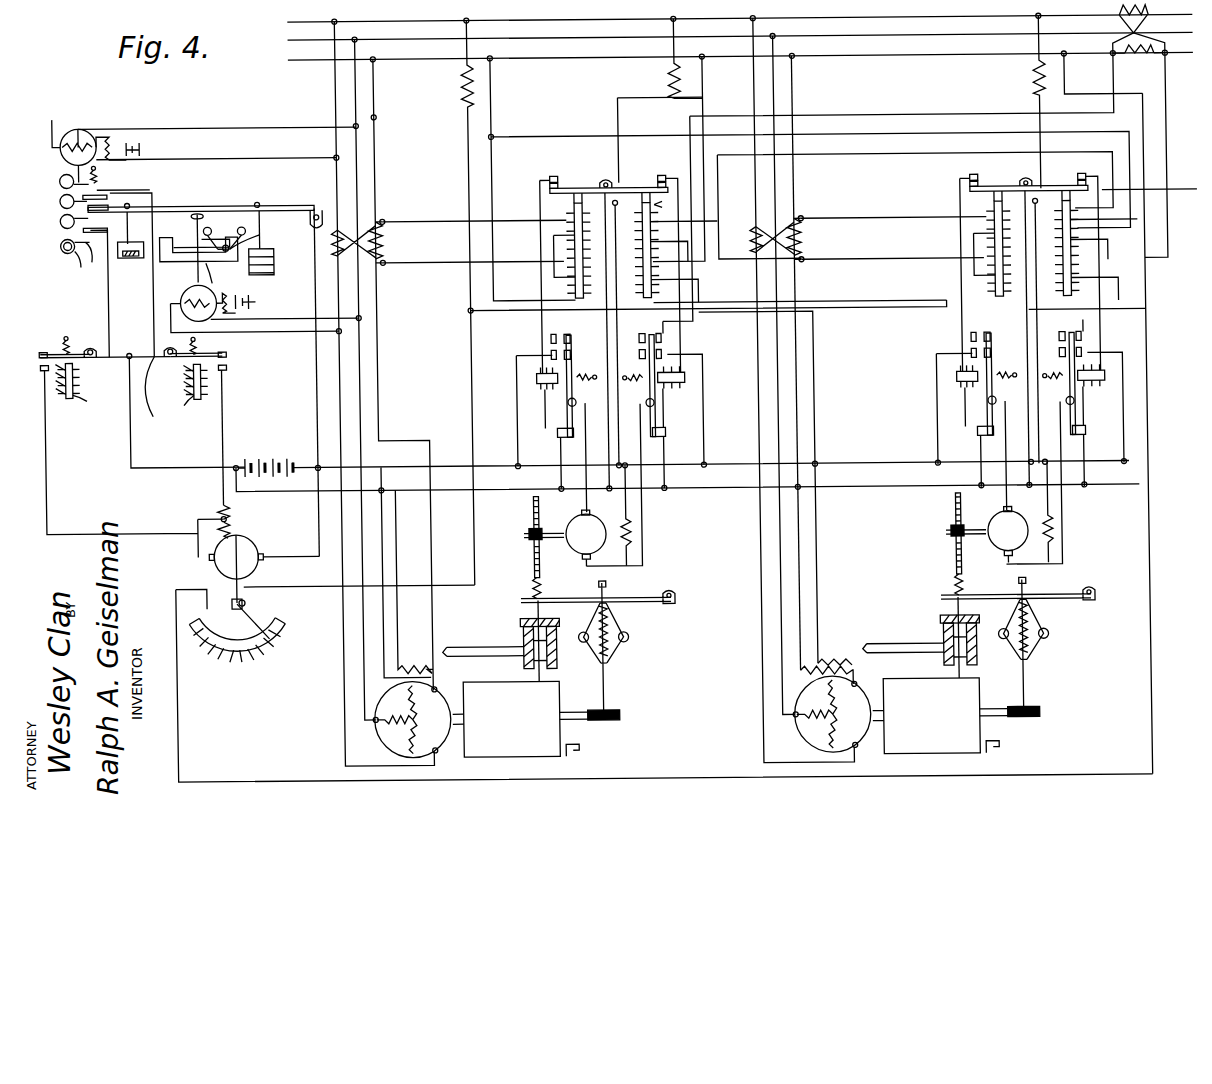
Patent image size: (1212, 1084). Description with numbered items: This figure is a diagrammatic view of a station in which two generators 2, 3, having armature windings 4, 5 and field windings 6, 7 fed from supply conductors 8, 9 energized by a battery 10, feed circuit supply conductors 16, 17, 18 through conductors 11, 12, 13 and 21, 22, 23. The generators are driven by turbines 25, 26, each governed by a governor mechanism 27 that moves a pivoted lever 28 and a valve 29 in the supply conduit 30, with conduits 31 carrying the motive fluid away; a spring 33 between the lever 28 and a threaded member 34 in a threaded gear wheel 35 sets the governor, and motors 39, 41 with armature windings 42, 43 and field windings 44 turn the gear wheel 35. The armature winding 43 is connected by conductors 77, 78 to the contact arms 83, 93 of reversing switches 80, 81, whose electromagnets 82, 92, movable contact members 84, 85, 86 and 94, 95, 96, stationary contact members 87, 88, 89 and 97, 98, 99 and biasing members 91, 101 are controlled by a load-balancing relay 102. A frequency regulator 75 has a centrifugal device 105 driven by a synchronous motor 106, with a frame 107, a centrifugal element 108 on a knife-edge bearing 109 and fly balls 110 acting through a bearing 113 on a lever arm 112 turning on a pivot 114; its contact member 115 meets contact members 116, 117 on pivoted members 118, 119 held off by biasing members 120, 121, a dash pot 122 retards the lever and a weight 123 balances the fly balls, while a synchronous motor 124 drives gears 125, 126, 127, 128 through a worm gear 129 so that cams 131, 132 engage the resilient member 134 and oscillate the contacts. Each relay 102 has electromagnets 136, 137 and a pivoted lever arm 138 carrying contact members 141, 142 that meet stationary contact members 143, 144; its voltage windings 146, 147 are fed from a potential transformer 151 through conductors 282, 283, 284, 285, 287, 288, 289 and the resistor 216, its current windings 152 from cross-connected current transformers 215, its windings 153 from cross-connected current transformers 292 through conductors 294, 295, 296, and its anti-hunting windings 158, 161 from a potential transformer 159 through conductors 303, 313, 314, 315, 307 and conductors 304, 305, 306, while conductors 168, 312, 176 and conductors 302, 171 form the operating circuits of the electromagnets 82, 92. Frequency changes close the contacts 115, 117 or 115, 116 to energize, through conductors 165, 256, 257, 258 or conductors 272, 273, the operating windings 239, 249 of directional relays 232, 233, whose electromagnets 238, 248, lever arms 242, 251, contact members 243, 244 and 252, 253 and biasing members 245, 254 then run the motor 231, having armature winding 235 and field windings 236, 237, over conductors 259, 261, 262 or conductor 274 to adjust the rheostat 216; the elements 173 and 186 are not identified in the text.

The generator 2 is at (462, 679).
The generator 3 is at (872, 679).
The armature winding 4 is at (434, 746).
The armature winding 5 is at (850, 744).
The field winding 6 is at (414, 650).
The field winding 7 is at (829, 648).
The supply conductor 8 is at (736, 464).
The supply conductor 9 is at (732, 490).
The battery 10 is at (284, 456).
The conductor 11 is at (340, 404).
The conductor 12 is at (360, 426).
The conductor 13 is at (380, 424).
The circuit supply conductor 16 is at (556, 20).
The circuit supply conductor 17 is at (556, 38).
The circuit supply conductor 18 is at (562, 58).
The conductor 21 is at (758, 392).
The conductor 22 is at (778, 410).
The conductor 23 is at (796, 407).
The turbine 25 is at (528, 758).
The turbine 26 is at (910, 756).
The governor mechanism 27 is at (626, 646).
The pivoted lever 28 is at (620, 596).
The valve 29 is at (518, 631).
The supply conduit 30 is at (469, 644).
The conduit 31 is at (568, 758).
The spring 33 is at (528, 590).
The threaded member 34 is at (531, 512).
The gear wheel 35 is at (521, 535).
The motor 39 is at (575, 511).
The motor 41 is at (982, 511).
The armature winding 42 is at (580, 560).
The armature winding 43 is at (1004, 559).
The field winding 44 is at (630, 536).
The frequency regulator 75 is at (245, 195).
The conductor 77 is at (586, 432).
The conductor 78 is at (850, 449).
The reversing switch 80 is at (541, 427).
The reversing switch 81 is at (688, 427).
The electromagnet 82 is at (549, 386).
The movable contact arm 83 is at (574, 368).
The movable contact member 84 is at (781, 446).
The movable contact member 85 is at (571, 354).
The movable contact member 86 is at (553, 334).
The stationary contact member 87 is at (557, 437).
The stationary contact member 88 is at (551, 352).
The stationary contact member 89 is at (551, 333).
The biasing member 91 is at (576, 378).
The electromagnet 92 is at (676, 385).
The movable contact arm 93 is at (648, 360).
The movable contact member 94 is at (862, 448).
The movable contact member 95 is at (648, 349).
The movable contact member 96 is at (894, 318).
The stationary contact member 97 is at (663, 435).
The stationary contact member 98 is at (690, 345).
The stationary contact member 99 is at (908, 325).
The biasing member 101 is at (853, 397).
The load-balancing relay 102 is at (586, 164).
The centrifugal device 105 is at (190, 284).
The synchronous motor 106 is at (184, 301).
The frame 107 is at (222, 275).
The centrifugal element 108 is at (198, 237).
The knife-edge bearing 109 is at (260, 238).
The fly balls 110 is at (224, 234).
The lever arm 112 is at (172, 202).
The bearing 113 is at (194, 215).
The pivot 114 is at (320, 194).
The movable contact member 115 is at (131, 206).
The stationary contact member 116 is at (103, 204).
The stationary contact member 117 is at (105, 215).
The pivoted member 118 is at (143, 269).
The pivoted member 119 is at (108, 292).
The biasing member 120 is at (123, 185).
The biasing member 121 is at (96, 262).
The dash pot 122 is at (126, 247).
The weight 123 is at (276, 258).
The synchronous motor 124 is at (78, 130).
The gear 125 is at (63, 180).
The gear 126 is at (63, 199).
The gear 127 is at (63, 217).
The gear 128 is at (63, 236).
The worm gear 129 is at (106, 175).
The cam 131 is at (68, 170).
The cam 132 is at (63, 247).
The resilient member 134 is at (83, 252).
The electromagnet 136 is at (565, 285).
The electromagnet 137 is at (841, 294).
The lever arm 138 is at (610, 182).
The movable contact member 141 is at (543, 184).
The movable contact member 142 is at (660, 180).
The stationary contact member 143 is at (552, 176).
The stationary contact member 144 is at (666, 175).
The voltage winding 146 is at (556, 251).
The voltage winding 147 is at (690, 269).
The potential transformer 151 is at (468, 85).
The current winding 152 is at (569, 231).
The current winding 153 is at (662, 232).
The anti-hunting winding 158 is at (570, 206).
The potential transformer 159 is at (675, 82).
The anti-hunting winding 161 is at (1105, 285).
The conductor 165 is at (316, 395).
The conductor 168 is at (576, 401).
The conductor 171 is at (652, 480).
The conductor 173 is at (704, 380).
The conductor 176 is at (555, 478).
The conductor 186 is at (517, 404).
The cross-connected current transformers 215 is at (395, 250).
The rheostat 216 is at (254, 655).
The motor 231 is at (298, 551).
The motor-directional relay 232 is at (80, 420).
The motor-directional relay 233 is at (214, 426).
The armature winding 235 is at (208, 564).
The series field winding 236 is at (230, 534).
The series field winding 237 is at (230, 514).
The electromagnet 238 is at (96, 404).
The operating winding 239 is at (80, 380).
The lever arm 242 is at (85, 350).
The movable contact member 243 is at (40, 350).
The stationary contact member 244 is at (44, 368).
The biasing member 245 is at (62, 338).
The electromagnet 248 is at (174, 404).
The operating winding 249 is at (181, 381).
The lever arm 251 is at (198, 350).
The movable contact member 252 is at (228, 354).
The fixed contact member 253 is at (228, 368).
The biasing member 254 is at (190, 338).
The conductor 256 is at (108, 320).
The conductor 257 is at (148, 348).
The conductor 258 is at (130, 444).
The conductor 259 is at (46, 488).
The conductor 261 is at (200, 518).
The conductor 262 is at (281, 566).
The conductor 272 is at (140, 288).
The conductor 273 is at (155, 398).
The conductor 274 is at (222, 444).
The conductor 282 is at (495, 129).
The conductor 283 is at (864, 316).
The conductor 284 is at (1147, 392).
The conductor 285 is at (470, 184).
The conductor 287 is at (905, 138).
The conductor 288 is at (862, 302).
The conductor 289 is at (495, 317).
The cross-connected current transformers 292 is at (1118, 60).
The conductor 294 is at (995, 115).
The conductor 295 is at (884, 158).
The conductor 296 is at (1158, 260).
The conductor 302 is at (680, 200).
The conductor 303 is at (620, 120).
The conductor 304 is at (829, 208).
The conductor 305 is at (889, 298).
The conductor 306 is at (848, 319).
The conductor 307 is at (709, 320).
The conductor 312 is at (540, 367).
The conductor 313 is at (804, 208).
The conductor 314 is at (530, 302).
The conductor 315 is at (800, 324).